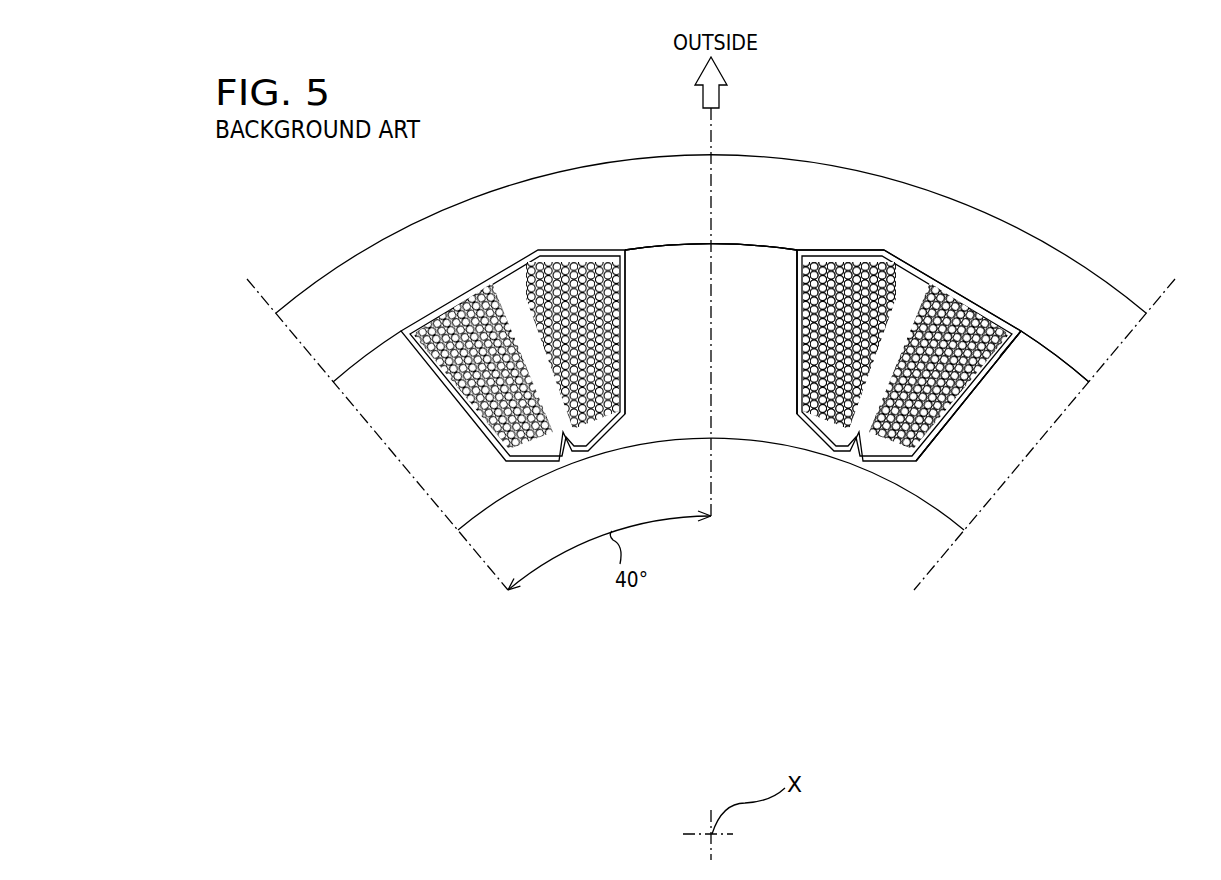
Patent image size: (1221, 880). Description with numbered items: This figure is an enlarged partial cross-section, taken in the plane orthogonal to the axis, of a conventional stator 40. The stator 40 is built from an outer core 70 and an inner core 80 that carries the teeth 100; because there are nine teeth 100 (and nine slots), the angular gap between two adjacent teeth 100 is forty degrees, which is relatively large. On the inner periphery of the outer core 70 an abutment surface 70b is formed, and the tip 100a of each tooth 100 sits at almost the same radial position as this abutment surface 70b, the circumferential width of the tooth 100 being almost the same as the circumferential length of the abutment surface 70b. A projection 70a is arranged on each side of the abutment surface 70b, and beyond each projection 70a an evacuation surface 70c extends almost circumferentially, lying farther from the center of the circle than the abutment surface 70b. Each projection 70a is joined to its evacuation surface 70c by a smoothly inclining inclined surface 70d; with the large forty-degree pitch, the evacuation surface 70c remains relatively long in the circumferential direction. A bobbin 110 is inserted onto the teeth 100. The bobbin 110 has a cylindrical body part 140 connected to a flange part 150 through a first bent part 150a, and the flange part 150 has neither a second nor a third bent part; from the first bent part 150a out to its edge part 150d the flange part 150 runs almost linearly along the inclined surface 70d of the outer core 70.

The stator 40 is at (1163, 186).
The outer core 70 is at (1103, 333).
The projection 70a is at (799, 247).
The abutment surface 70b is at (728, 243).
The evacuation surface 70c is at (920, 264).
The inclined surface 70d is at (890, 253).
The inner core 80 is at (1003, 445).
The teeth 100 is at (677, 397).
The tip 100a is at (692, 243).
The bobbin 110 is at (872, 252).
The cylindrical body part 140 is at (795, 363).
The flange part 150 is at (833, 257).
The first bent part 150a is at (793, 255).
The edge part 150d is at (923, 253).